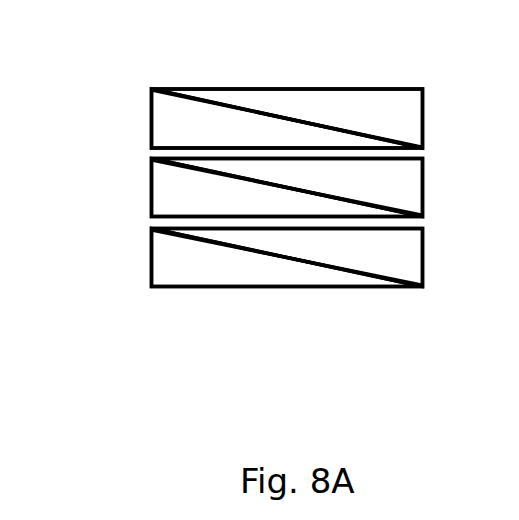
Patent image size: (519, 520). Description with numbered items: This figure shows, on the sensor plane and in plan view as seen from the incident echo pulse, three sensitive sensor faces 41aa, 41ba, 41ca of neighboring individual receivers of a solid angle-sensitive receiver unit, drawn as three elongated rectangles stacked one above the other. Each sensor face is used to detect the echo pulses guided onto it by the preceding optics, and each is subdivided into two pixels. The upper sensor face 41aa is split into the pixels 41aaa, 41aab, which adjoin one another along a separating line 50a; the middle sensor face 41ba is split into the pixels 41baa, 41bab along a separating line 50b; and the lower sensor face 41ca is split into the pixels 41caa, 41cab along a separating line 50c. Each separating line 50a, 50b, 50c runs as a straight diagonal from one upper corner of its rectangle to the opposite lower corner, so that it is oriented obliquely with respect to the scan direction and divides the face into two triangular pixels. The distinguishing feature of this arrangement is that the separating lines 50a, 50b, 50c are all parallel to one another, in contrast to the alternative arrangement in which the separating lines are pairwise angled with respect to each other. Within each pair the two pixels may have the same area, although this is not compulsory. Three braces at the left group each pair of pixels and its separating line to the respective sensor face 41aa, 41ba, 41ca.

The sensor face 41aa is at (137, 89).
The pixel 41aaa is at (325, 112).
The pixel 41aab is at (185, 128).
The separating line 50a is at (352, 131).
The sensor face 41ba is at (137, 157).
The pixel 41baa is at (195, 198).
The pixel 41bab is at (282, 173).
The separating line 50b is at (343, 198).
The sensor face 41ca is at (137, 227).
The pixel 41caa is at (405, 268).
The pixel 41cab is at (312, 275).
The separating line 50c is at (355, 272).